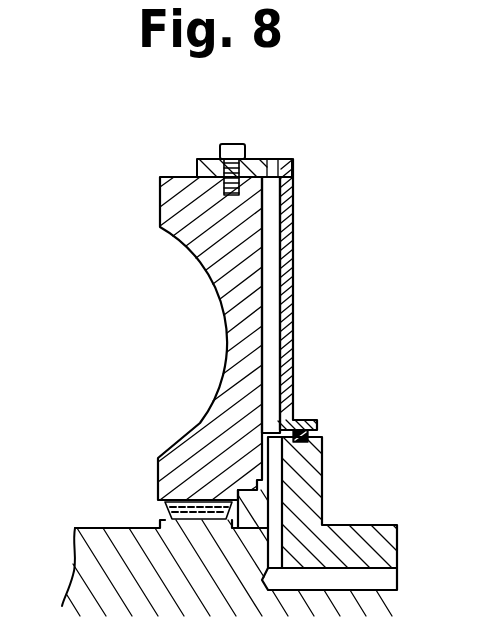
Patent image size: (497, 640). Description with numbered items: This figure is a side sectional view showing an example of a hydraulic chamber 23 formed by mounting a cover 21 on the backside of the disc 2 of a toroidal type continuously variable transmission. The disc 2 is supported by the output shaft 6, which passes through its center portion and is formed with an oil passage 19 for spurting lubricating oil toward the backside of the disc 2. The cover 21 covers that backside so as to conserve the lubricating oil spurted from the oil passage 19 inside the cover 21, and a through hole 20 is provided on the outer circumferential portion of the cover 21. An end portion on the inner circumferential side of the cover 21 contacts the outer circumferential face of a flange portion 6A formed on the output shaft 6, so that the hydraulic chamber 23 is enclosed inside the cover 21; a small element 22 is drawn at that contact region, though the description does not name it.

The input disc 2 is at (160, 196).
The through hole 20 is at (273, 158).
The cover 21 is at (294, 216).
The hydraulic chamber 23 is at (281, 320).
The seal ring 22 is at (309, 441).
The flange portion 6A is at (323, 466).
The oil passage 19 is at (270, 503).
The output shaft 6 is at (110, 537).